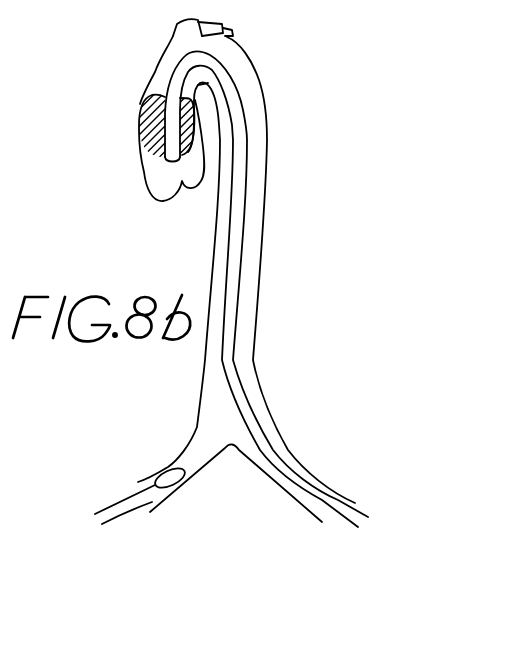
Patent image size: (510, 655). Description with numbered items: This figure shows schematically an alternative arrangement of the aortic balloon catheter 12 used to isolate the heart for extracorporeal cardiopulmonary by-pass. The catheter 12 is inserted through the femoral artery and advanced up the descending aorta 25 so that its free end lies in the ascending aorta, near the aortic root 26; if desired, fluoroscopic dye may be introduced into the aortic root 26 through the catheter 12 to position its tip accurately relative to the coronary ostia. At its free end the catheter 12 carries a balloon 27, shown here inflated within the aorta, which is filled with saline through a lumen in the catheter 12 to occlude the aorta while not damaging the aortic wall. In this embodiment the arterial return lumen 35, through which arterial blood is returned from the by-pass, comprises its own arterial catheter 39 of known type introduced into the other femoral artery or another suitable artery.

The descending aorta 25 is at (262, 228).
The aortic balloon catheter 12 is at (233, 376).
The aortic root 26 is at (158, 177).
The balloon 27 is at (141, 114).
The arterial return lumen 35 is at (166, 471).
The arterial catheter 39 is at (117, 512).